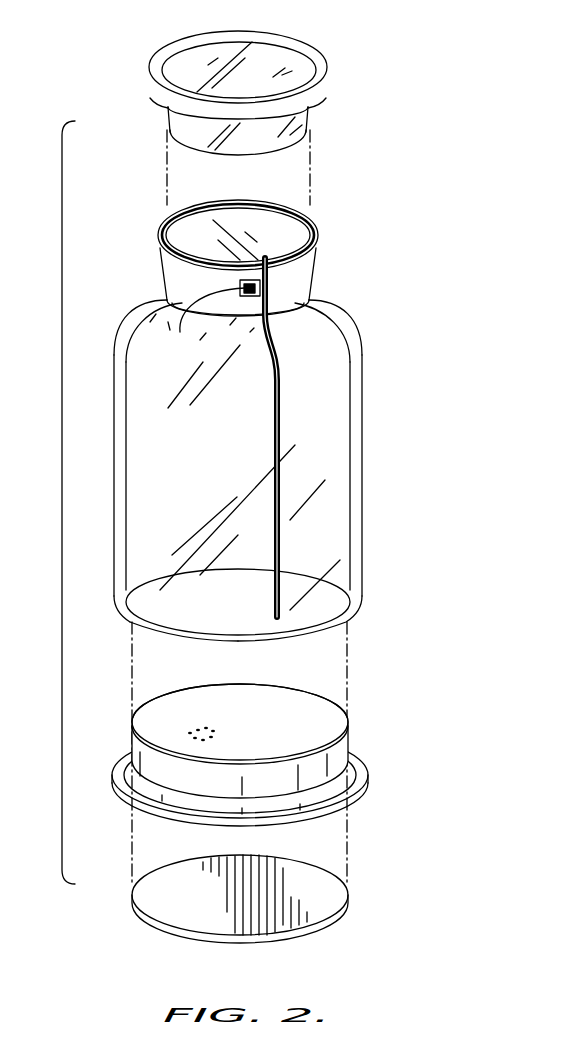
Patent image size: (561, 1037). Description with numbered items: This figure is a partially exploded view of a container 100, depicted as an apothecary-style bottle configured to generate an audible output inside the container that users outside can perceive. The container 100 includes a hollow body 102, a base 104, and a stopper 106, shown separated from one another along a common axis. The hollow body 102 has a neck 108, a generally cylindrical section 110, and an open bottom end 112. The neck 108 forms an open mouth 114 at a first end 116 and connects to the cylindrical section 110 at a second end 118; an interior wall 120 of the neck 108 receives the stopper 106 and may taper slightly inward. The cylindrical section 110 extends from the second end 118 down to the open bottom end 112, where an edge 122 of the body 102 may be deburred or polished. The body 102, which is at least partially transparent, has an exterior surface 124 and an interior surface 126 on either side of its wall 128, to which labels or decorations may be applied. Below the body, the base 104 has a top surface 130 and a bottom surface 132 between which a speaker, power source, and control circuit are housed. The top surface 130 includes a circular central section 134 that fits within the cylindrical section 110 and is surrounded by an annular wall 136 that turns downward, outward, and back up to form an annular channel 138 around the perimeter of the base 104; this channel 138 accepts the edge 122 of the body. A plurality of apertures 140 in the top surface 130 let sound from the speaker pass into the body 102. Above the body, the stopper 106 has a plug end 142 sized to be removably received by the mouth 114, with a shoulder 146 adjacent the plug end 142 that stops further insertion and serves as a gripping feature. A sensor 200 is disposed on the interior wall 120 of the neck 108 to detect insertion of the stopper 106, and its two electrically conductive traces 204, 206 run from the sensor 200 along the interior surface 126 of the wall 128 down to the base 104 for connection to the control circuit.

The container 100 is at (62, 500).
The hollow body 102 is at (345, 313).
The base 104 is at (320, 70).
The stopper 106 is at (283, 40).
The neck 108 is at (315, 272).
The cylindrical section 110 is at (366, 410).
The open bottom end 112 is at (336, 639).
The open mouth 114 is at (303, 225).
The first end 116 is at (135, 228).
The second end 118 is at (154, 281).
The interior wall 120 is at (207, 215).
The edge 122 is at (165, 632).
The exterior surface 124 is at (113, 498).
The interior surface 126 is at (128, 485).
The wall 128 is at (120, 590).
The top surface 130 is at (237, 690).
The bottom surface 132 is at (320, 925).
The circular central section 134 is at (283, 700).
The annular wall 136 is at (115, 773).
The annular channel 138 is at (352, 742).
The apertures 140 is at (186, 731).
The plug end 142 is at (310, 118).
The shoulder 146 is at (160, 100).
The sensor 200 is at (240, 296).
The electrically conductive trace 204 is at (306, 437).
The electrically conductive trace 206 is at (282, 412).